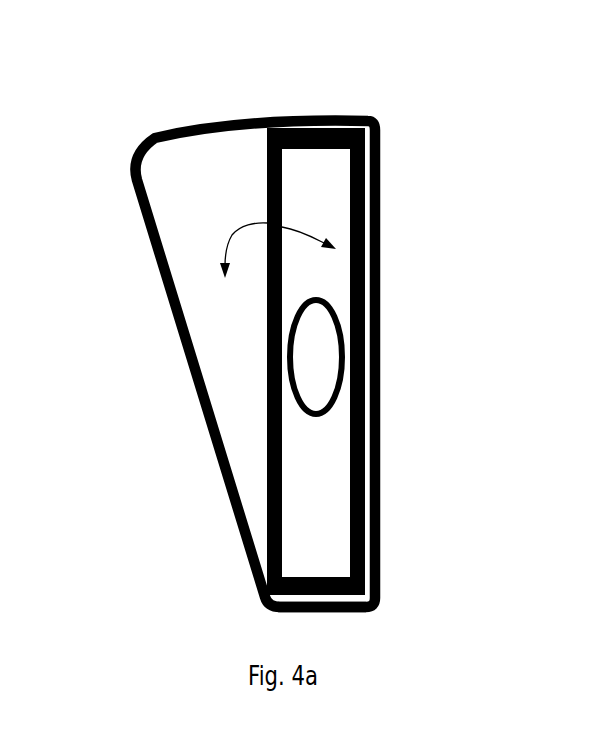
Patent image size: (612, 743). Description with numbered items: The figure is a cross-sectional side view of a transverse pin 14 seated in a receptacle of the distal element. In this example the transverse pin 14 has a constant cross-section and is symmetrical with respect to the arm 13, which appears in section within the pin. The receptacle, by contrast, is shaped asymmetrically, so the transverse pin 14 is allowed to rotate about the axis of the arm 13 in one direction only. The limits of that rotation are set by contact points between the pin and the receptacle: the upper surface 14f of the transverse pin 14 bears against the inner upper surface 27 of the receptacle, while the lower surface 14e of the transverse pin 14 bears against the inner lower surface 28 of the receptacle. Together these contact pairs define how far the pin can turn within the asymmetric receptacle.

The arm 13 is at (315, 372).
The transverse pin 14 is at (315, 220).
The lower surface of the transverse pin 14e is at (365, 483).
The upper surface of the transverse pin 14f is at (265, 188).
The inner upper surface of the receptacle 27 is at (137, 192).
The inner lower surface of the receptacle 28 is at (368, 553).